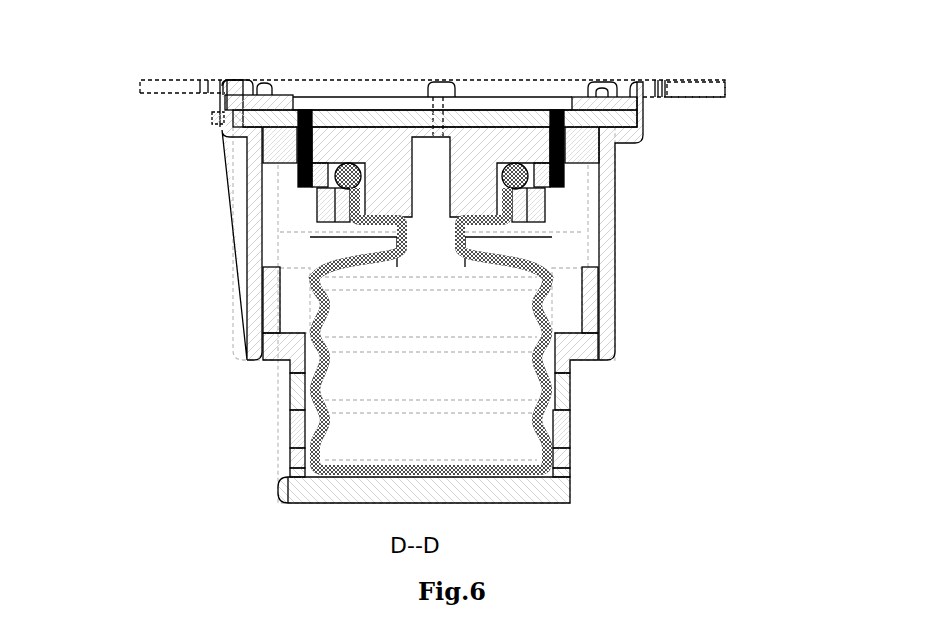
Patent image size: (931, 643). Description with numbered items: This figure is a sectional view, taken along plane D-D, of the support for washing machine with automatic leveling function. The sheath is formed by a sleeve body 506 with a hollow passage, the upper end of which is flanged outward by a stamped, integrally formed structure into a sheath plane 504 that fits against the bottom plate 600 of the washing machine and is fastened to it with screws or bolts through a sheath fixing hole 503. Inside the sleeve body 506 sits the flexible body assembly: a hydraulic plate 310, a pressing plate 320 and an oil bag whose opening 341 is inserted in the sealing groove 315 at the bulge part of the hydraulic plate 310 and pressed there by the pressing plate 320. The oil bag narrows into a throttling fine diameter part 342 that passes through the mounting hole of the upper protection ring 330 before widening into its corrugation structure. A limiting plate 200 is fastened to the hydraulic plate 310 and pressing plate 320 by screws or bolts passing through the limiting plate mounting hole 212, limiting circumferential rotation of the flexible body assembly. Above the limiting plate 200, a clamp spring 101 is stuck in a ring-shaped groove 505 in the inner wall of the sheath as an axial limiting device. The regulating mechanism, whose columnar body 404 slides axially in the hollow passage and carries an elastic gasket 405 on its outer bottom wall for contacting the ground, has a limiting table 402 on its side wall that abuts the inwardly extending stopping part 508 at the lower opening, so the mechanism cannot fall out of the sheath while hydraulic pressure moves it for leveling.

The clamp spring 101 is at (245, 87).
The limiting plate 200 is at (428, 121).
The limiting plate mounting hole 212 is at (205, 117).
The hydraulic plate 310 is at (483, 177).
The sealing groove 315 is at (350, 160).
The pressing plate 320 is at (612, 82).
The upper protection ring 330 is at (323, 248).
The opening 341 is at (295, 187).
The throttling fine diameter part 342 is at (330, 235).
The limiting table 402 is at (597, 333).
The columnar body 404 is at (563, 452).
The elastic gasket 405 is at (568, 497).
The sheath fixing hole 503 is at (688, 92).
The sheath plane 504 is at (648, 88).
The ring-shaped groove 505 is at (227, 110).
The sleeve body 506 is at (613, 272).
The stopping part 508 is at (593, 348).
The bottom plate 600 is at (297, 145).